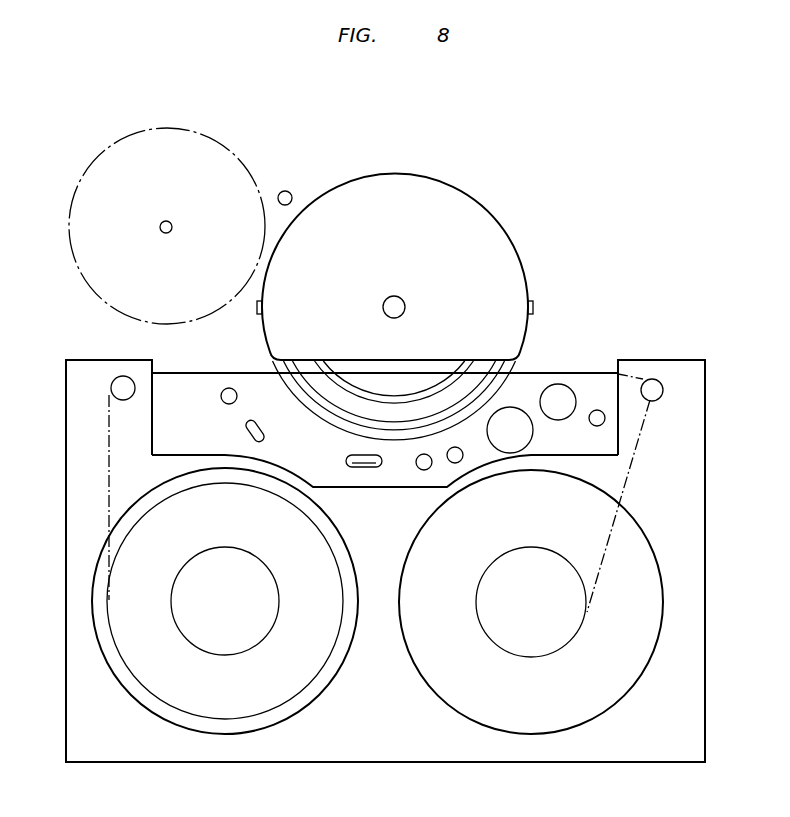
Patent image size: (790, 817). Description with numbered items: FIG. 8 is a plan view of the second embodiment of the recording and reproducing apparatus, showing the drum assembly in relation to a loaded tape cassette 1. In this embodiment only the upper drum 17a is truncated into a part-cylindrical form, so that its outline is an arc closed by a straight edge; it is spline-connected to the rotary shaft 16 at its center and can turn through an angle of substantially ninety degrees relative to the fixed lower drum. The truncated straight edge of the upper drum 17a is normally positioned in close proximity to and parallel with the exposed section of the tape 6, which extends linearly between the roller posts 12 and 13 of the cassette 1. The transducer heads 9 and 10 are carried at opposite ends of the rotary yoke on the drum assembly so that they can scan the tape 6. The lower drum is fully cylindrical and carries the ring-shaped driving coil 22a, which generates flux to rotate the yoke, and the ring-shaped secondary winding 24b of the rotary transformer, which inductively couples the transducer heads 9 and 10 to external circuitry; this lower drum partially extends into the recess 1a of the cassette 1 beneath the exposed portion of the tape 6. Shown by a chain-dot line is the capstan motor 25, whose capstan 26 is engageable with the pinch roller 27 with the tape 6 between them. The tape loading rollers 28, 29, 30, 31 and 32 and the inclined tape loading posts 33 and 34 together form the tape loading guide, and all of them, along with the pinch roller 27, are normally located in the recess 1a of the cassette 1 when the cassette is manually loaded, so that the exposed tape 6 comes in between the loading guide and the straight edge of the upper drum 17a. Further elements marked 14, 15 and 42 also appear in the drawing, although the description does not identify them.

The cassette 1 is at (706, 598).
The recess 1a is at (331, 488).
The tape 6 is at (197, 375).
The transducer head 9 is at (256, 311).
The transducer head 10 is at (536, 310).
The roller post 12 is at (663, 390).
The roller post 13 is at (112, 389).
The left reel 14 is at (118, 673).
The right reel 15 is at (663, 645).
The rotary shaft 16 is at (398, 304).
The upper drum 17a is at (457, 213).
The ring-shaped driving coil 22a is at (368, 372).
The secondary winding 24b is at (421, 408).
The capstan motor 25 is at (213, 134).
The capstan 26 is at (162, 222).
The pinch roller 27 is at (528, 436).
The tape loading roller 28 is at (222, 400).
The tape loading roller 29 is at (598, 410).
The tape loading roller 30 is at (566, 410).
The tape loading roller 31 is at (460, 452).
The tape loading roller 32 is at (421, 462).
The inclined tape loading post 33 is at (347, 457).
The inclined tape loading post 34 is at (252, 428).
The guide pin 42 is at (285, 191).